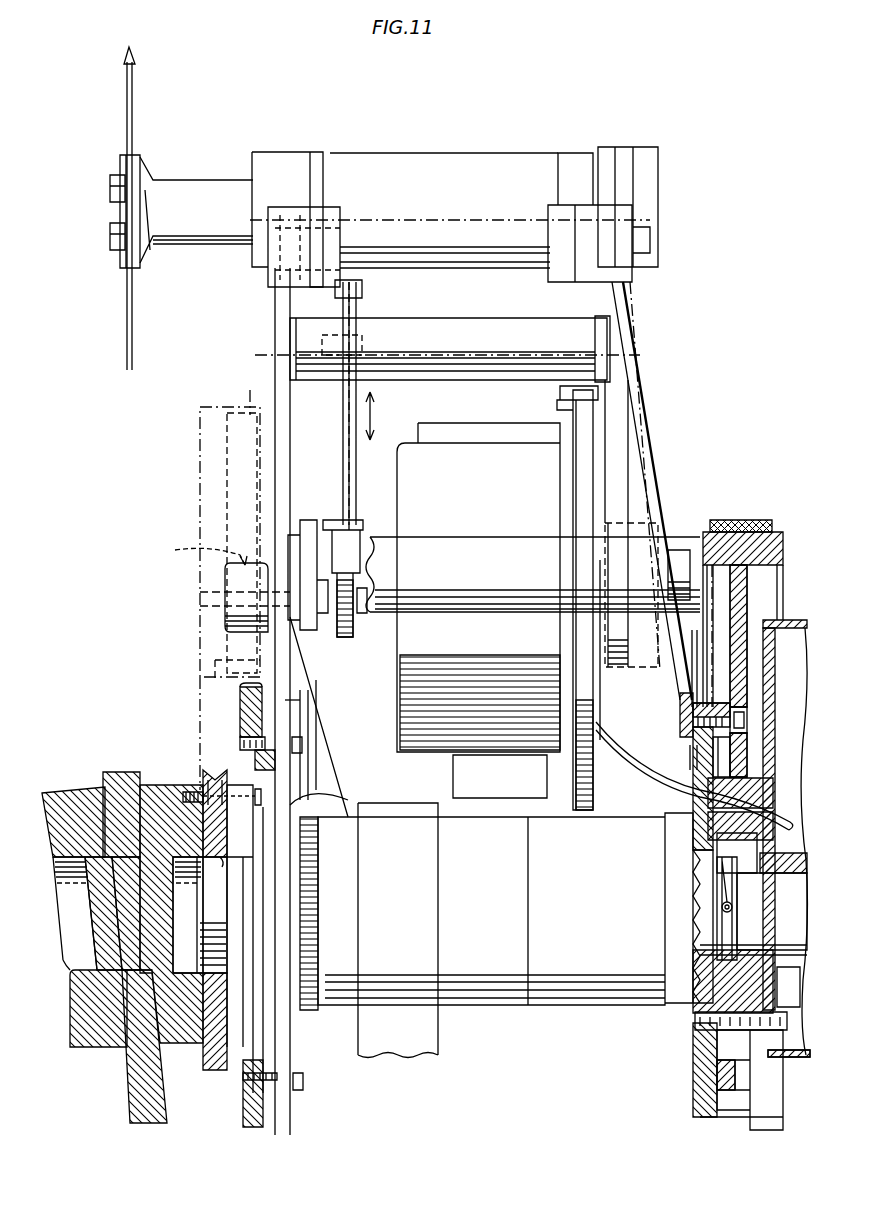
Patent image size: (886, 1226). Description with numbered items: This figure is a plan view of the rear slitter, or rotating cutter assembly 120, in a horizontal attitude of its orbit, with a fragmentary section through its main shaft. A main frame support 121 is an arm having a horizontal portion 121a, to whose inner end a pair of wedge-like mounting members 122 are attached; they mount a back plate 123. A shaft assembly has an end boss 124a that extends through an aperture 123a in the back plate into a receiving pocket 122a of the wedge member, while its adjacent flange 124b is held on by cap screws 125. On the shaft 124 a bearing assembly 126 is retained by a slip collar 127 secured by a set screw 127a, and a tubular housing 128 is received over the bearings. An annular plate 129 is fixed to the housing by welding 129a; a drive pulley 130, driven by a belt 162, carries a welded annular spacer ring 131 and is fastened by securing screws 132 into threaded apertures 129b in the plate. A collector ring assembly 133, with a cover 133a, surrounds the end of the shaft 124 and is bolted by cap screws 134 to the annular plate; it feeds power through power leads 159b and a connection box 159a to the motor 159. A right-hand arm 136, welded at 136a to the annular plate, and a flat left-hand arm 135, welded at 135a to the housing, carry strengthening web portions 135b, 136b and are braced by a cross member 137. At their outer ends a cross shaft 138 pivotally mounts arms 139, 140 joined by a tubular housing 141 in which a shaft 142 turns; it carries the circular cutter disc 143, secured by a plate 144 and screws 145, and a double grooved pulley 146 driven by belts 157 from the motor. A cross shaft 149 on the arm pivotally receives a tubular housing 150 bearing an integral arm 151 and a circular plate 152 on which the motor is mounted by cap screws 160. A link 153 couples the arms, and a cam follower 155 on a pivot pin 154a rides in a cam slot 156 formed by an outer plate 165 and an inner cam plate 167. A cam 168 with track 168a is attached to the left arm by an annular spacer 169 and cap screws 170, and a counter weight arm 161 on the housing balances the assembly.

The rotating cutter assembly 120 is at (473, 134).
The main frame support 121 is at (120, 1108).
The horizontal portion of main arm 121a is at (128, 1080).
The wedge-like shaped mounting members 122 is at (72, 793).
The receiving pocket 122a is at (182, 890).
The back plate 123 is at (205, 445).
The aperture in back mounting plate 123a is at (232, 860).
The shaft 124 is at (750, 943).
The end boss 124a is at (220, 915).
The flange 124b is at (296, 1024).
The cap screws 125 is at (262, 796).
The bearing assembly 126 is at (692, 858).
The slip collar 127 is at (735, 920).
The set screw 127a is at (757, 825).
The tubular housing 128 is at (520, 1008).
The annular plate 129 is at (695, 1050).
The welding 129a is at (694, 1016).
The threaded apertures 129b is at (697, 695).
The drive pulley 130 is at (770, 598).
The annular spacer ring 131 is at (707, 705).
The securing screws 132 is at (748, 722).
The collector ring assembly 133 is at (776, 800).
The cover 133a is at (782, 765).
The cap screws 134 is at (782, 1020).
The left-hand arm 135 is at (300, 463).
The weld 135a is at (338, 805).
The strengthening web portion 135b is at (325, 770).
The right-hand arm 136 is at (655, 487).
The weld 136a is at (680, 697).
The strengthening web portion 136b is at (688, 740).
The cross member 137 is at (440, 320).
The cross shaft 138 is at (462, 236).
The arm 139 is at (563, 186).
The arm 140 is at (322, 193).
The cross connecting tubular housing 141 is at (387, 162).
The shaft 142 is at (196, 190).
The circular cutter disc 143 is at (126, 118).
The plate 144 is at (118, 268).
The screws 145 is at (108, 235).
The double grooved pulley 146 is at (660, 162).
The cross shaft 149 is at (684, 555).
The tubular housing 150 is at (466, 550).
The integral arm 151 is at (313, 505).
The circular plate 152 is at (604, 792).
The link 153 is at (352, 464).
The pivot pin 154a is at (205, 605).
The cam follower 155 is at (233, 588).
The cam slot 156 is at (198, 551).
The belts 157 is at (618, 343).
The motor 159 is at (478, 587).
The connection box 159a is at (500, 776).
The power leads 159b is at (606, 745).
The cap screws 160 is at (558, 400).
The counter weight arm 161 is at (440, 1042).
The belt 162 is at (745, 520).
The outer plate 165 is at (232, 528).
The inner cam plate 167 is at (212, 660).
The cam 168 is at (238, 718).
The cam track 168a is at (238, 688).
The annular spacer 169 is at (300, 705).
The cap screws 170 is at (304, 745).